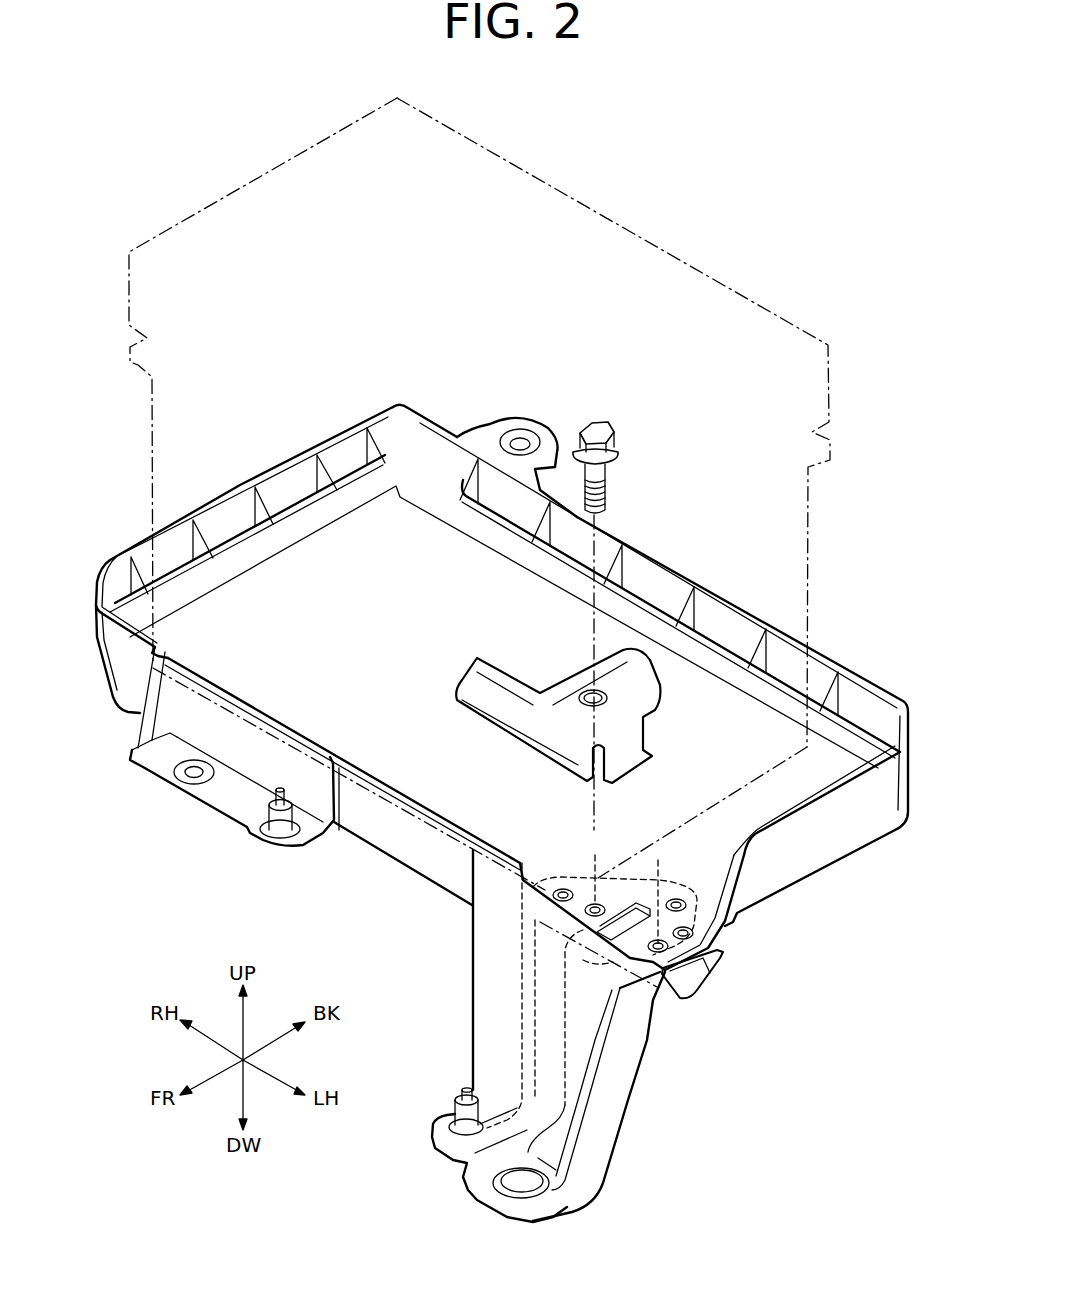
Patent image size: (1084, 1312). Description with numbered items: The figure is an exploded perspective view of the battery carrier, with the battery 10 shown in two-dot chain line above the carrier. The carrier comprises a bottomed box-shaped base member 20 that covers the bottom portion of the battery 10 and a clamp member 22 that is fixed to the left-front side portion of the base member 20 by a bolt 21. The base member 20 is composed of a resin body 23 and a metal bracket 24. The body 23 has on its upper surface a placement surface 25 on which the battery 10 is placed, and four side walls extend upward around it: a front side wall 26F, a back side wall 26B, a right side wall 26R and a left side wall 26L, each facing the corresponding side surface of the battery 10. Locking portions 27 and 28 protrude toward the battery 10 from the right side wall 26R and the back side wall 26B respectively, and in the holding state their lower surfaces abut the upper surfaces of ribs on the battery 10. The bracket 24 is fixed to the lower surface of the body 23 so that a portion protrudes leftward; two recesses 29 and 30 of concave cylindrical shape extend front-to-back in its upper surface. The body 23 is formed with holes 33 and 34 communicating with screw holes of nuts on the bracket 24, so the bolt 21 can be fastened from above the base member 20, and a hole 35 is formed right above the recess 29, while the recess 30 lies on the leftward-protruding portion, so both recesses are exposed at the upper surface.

The battery 10 is at (808, 530).
The base member 20 is at (662, 1036).
The bolt 21 is at (600, 476).
The clamp member 22 is at (507, 737).
The body 23 is at (683, 910).
The bracket 24 is at (637, 1036).
The placement surface 25 is at (402, 690).
The right side wall 26R is at (243, 520).
The back side wall 26B is at (722, 622).
The front side wall 26F is at (390, 820).
The left side wall 26L is at (805, 842).
The locking portion 27 is at (314, 520).
The locking portion 28 is at (556, 563).
The recess 29 is at (660, 940).
The recess 30 is at (702, 968).
The hole 33 is at (595, 908).
The hole 34 is at (684, 926).
The hole 35 is at (622, 913).